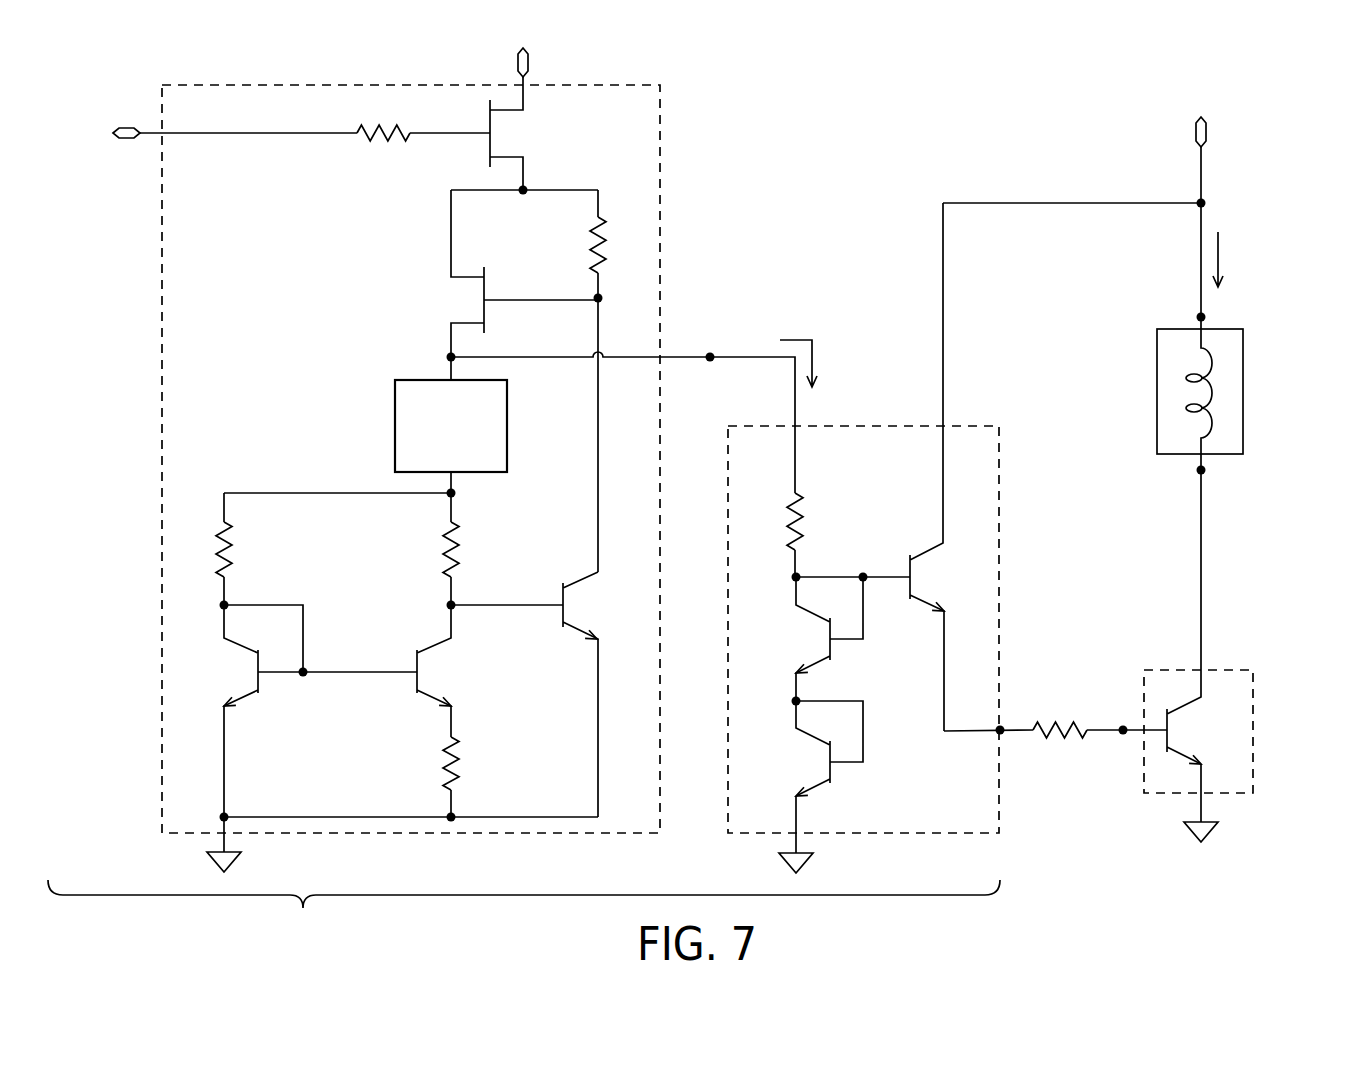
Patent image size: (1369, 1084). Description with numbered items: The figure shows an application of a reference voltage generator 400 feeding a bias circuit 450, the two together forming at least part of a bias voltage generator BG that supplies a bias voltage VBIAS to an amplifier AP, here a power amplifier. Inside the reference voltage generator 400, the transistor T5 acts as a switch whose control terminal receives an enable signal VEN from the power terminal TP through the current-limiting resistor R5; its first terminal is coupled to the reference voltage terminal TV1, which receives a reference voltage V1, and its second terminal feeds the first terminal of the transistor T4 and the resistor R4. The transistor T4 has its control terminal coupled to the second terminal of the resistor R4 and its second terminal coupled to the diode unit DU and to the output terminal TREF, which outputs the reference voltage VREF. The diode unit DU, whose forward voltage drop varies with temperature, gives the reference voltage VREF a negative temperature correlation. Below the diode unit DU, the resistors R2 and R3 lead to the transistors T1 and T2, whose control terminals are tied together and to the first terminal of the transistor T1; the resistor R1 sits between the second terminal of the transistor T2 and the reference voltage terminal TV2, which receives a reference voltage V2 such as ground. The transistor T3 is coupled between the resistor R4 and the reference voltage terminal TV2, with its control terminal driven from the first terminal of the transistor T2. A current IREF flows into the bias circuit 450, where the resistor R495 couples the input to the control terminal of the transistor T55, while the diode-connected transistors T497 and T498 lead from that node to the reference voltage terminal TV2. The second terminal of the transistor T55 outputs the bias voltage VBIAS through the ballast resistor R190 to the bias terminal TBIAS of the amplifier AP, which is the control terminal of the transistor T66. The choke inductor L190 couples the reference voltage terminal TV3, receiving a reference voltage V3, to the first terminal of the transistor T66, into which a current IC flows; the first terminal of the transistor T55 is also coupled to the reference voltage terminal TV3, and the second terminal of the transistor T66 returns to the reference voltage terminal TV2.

The reference voltage generator 400 is at (662, 187).
The bias circuit 450 is at (1001, 525).
The amplifier AP is at (1255, 688).
The bias voltage generator BG is at (524, 911).
The diode unit DU is at (390, 425).
The resistor R1 is at (470, 777).
The resistor R2 is at (204, 549).
The resistor R3 is at (470, 563).
The resistor R4 is at (617, 244).
The resistor R5 is at (423, 118).
The transistor T1 is at (249, 711).
The transistor T2 is at (448, 671).
The transistor T3 is at (595, 694).
The transistor T4 is at (508, 285).
The transistor T5 is at (523, 133).
The transistor T55 is at (950, 467).
The transistor T497 is at (804, 639).
The transistor T498 is at (804, 748).
The resistor R495 is at (831, 535).
The resistor R190 is at (1099, 714).
The inductor L190 is at (1213, 385).
The transistor T66 is at (1206, 617).
The power terminal TP is at (123, 128).
The reference voltage terminal TV1 is at (530, 62).
The reference voltage terminal TV2 is at (1241, 837).
The reference voltage terminal TV3 is at (1208, 130).
The output terminal TREF is at (708, 348).
The bias terminal TBIAS is at (1122, 733).
The reference voltage V1 is at (503, 61).
The reference voltage V2 is at (260, 881).
The reference voltage V3 is at (1200, 202).
The enable signal VEN is at (207, 140).
The reference voltage VREF is at (735, 384).
The bias voltage VBIAS is at (1017, 733).
The current IREF is at (824, 363).
The current IC is at (1233, 259).